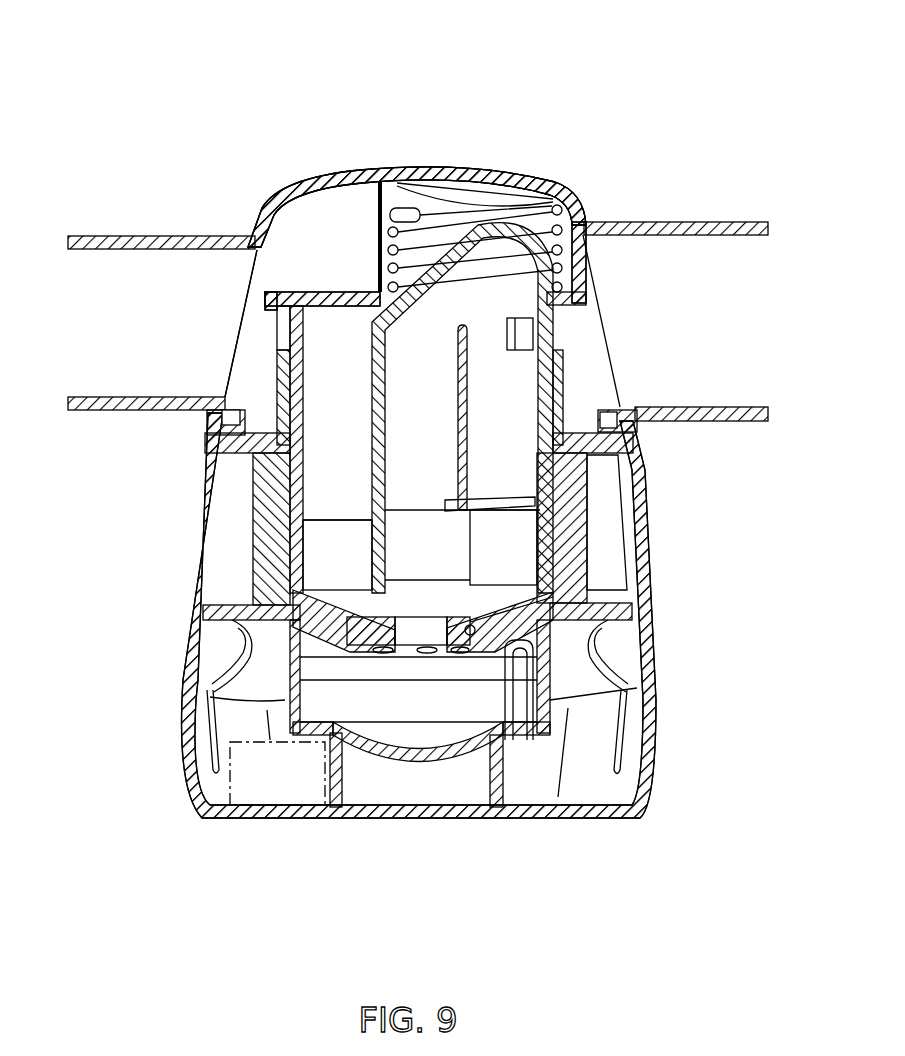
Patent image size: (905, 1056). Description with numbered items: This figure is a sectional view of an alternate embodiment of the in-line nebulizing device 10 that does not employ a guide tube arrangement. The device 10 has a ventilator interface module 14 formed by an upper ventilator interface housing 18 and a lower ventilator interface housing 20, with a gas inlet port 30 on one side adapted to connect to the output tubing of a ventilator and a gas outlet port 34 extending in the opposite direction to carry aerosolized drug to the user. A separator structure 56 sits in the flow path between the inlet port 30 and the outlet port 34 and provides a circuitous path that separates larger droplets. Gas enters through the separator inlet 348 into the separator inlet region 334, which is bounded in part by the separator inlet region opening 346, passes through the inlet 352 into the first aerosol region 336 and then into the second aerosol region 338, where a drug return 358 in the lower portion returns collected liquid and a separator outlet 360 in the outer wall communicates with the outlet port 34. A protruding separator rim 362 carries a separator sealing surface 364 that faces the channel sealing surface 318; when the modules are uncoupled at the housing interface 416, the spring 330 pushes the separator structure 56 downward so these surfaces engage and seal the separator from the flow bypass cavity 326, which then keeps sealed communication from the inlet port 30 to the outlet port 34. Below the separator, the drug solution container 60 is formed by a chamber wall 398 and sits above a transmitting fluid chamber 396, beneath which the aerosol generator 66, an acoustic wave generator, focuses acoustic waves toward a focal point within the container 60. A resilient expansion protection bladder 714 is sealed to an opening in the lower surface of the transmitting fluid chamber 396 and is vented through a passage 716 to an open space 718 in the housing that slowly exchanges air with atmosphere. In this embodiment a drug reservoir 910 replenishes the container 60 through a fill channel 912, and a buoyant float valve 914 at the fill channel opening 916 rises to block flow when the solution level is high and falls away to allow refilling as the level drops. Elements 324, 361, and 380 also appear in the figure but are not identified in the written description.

The in-line nebulizing device 10 is at (228, 76).
The ventilator interface module 14 is at (619, 185).
The upper ventilator interface housing 18 is at (244, 212).
The lower ventilator interface housing 20 is at (646, 487).
The gas inlet port 30 is at (62, 289).
The gas outlet port 34 is at (771, 290).
The separator structure 56 is at (348, 284).
The drug solution container 60 is at (427, 637).
The aerosol generator 66 is at (451, 818).
The channel sealing surface 318 is at (297, 358).
The inner housing wall 324 is at (258, 487).
The flow bypass cavity 326 is at (291, 251).
The spring 330 is at (556, 205).
The separator inlet region 334 is at (321, 414).
The first aerosol region 336 is at (403, 414).
The second aerosol region 338 is at (485, 414).
The separator inlet region opening 346 is at (210, 445).
The separator inlet 348 is at (295, 330).
The aerosol region inlet 352 is at (397, 519).
The drug return 358 is at (508, 496).
The separator outlet 360 is at (530, 340).
The spring seat 361 is at (384, 200).
The protruding separator rim 362 is at (270, 293).
The separator sealing surface 364 is at (272, 318).
The electronics module 380 is at (259, 786).
The transmitting fluid chamber 396 is at (353, 708).
The chamber wall 398 is at (262, 530).
The housing interface 416 is at (157, 668).
The expansion protection bladder 714 is at (506, 742).
The passage 716 is at (521, 742).
The open space 718 is at (576, 759).
The drug reservoir 910 is at (483, 561).
The fill channel 912 is at (582, 592).
The float valve 914 is at (545, 622).
The fill channel opening 916 is at (450, 617).